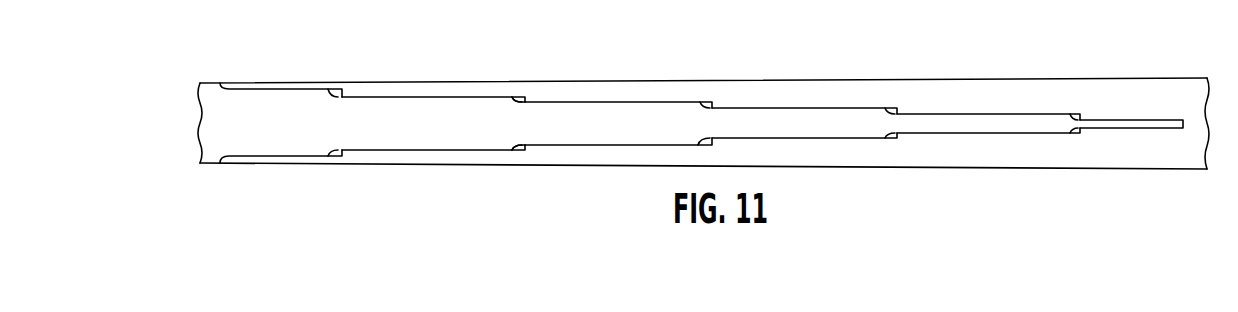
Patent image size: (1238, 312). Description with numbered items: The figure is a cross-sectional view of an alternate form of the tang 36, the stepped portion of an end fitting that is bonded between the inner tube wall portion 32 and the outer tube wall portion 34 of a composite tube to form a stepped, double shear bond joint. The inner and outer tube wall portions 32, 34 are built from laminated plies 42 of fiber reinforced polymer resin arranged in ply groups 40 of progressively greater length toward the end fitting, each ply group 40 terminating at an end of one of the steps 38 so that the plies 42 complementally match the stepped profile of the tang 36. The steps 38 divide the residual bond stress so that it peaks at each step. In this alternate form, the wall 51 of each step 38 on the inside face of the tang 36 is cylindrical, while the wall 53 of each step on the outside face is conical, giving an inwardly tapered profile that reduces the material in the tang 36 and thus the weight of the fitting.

The inner tube wall portion 32 is at (1172, 150).
The outer tube wall portion 34 is at (1117, 97).
The tang 36 is at (452, 133).
The steps 38 is at (458, 0).
The ply groups 40 is at (583, 0).
The laminated plies 42 is at (997, 150).
The wall of step on inside face of tang 51 is at (578, 157).
The wall of step on outside face of tang 53 is at (582, 88).